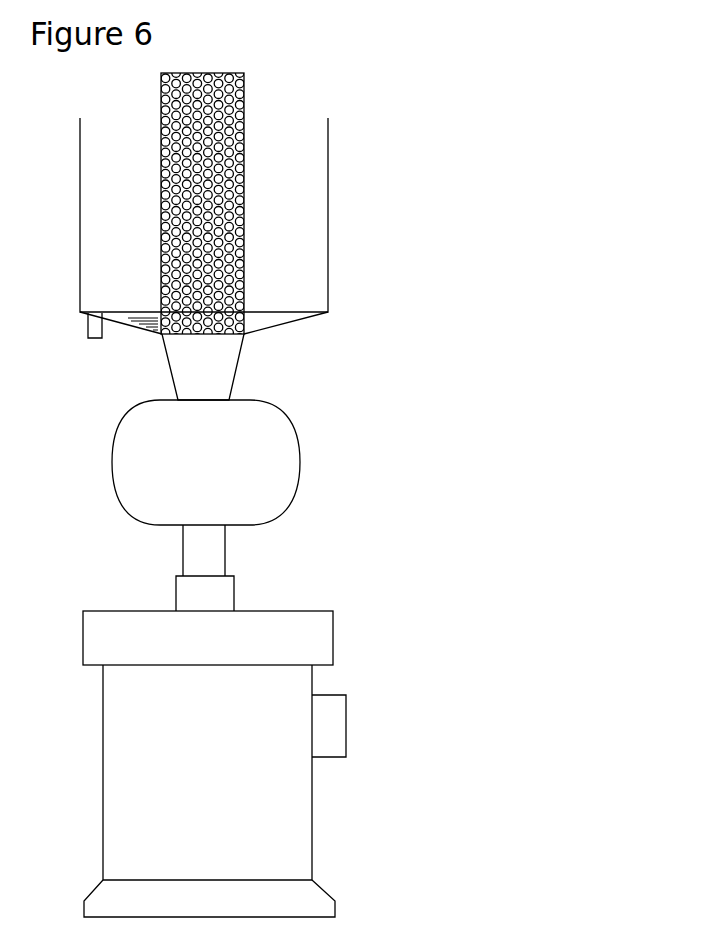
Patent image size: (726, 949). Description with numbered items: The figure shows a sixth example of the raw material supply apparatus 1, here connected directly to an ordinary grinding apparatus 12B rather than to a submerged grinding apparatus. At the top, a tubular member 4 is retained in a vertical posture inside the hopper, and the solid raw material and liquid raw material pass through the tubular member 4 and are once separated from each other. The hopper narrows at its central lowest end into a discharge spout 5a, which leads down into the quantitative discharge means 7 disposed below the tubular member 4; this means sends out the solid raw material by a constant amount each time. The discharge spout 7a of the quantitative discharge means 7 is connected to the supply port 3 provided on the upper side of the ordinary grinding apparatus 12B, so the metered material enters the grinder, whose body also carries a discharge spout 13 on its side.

The raw material supply apparatus 1 is at (328, 183).
The tubular member 4 is at (160, 173).
The discharge spout 5a is at (237, 366).
The quantitative discharge means 7 is at (300, 457).
The discharge spout of the quantitative discharge means 7a is at (225, 546).
The raw material supply port 3 is at (235, 593).
The ordinary grinding apparatus 12B is at (335, 635).
The discharge spout 13 is at (331, 751).